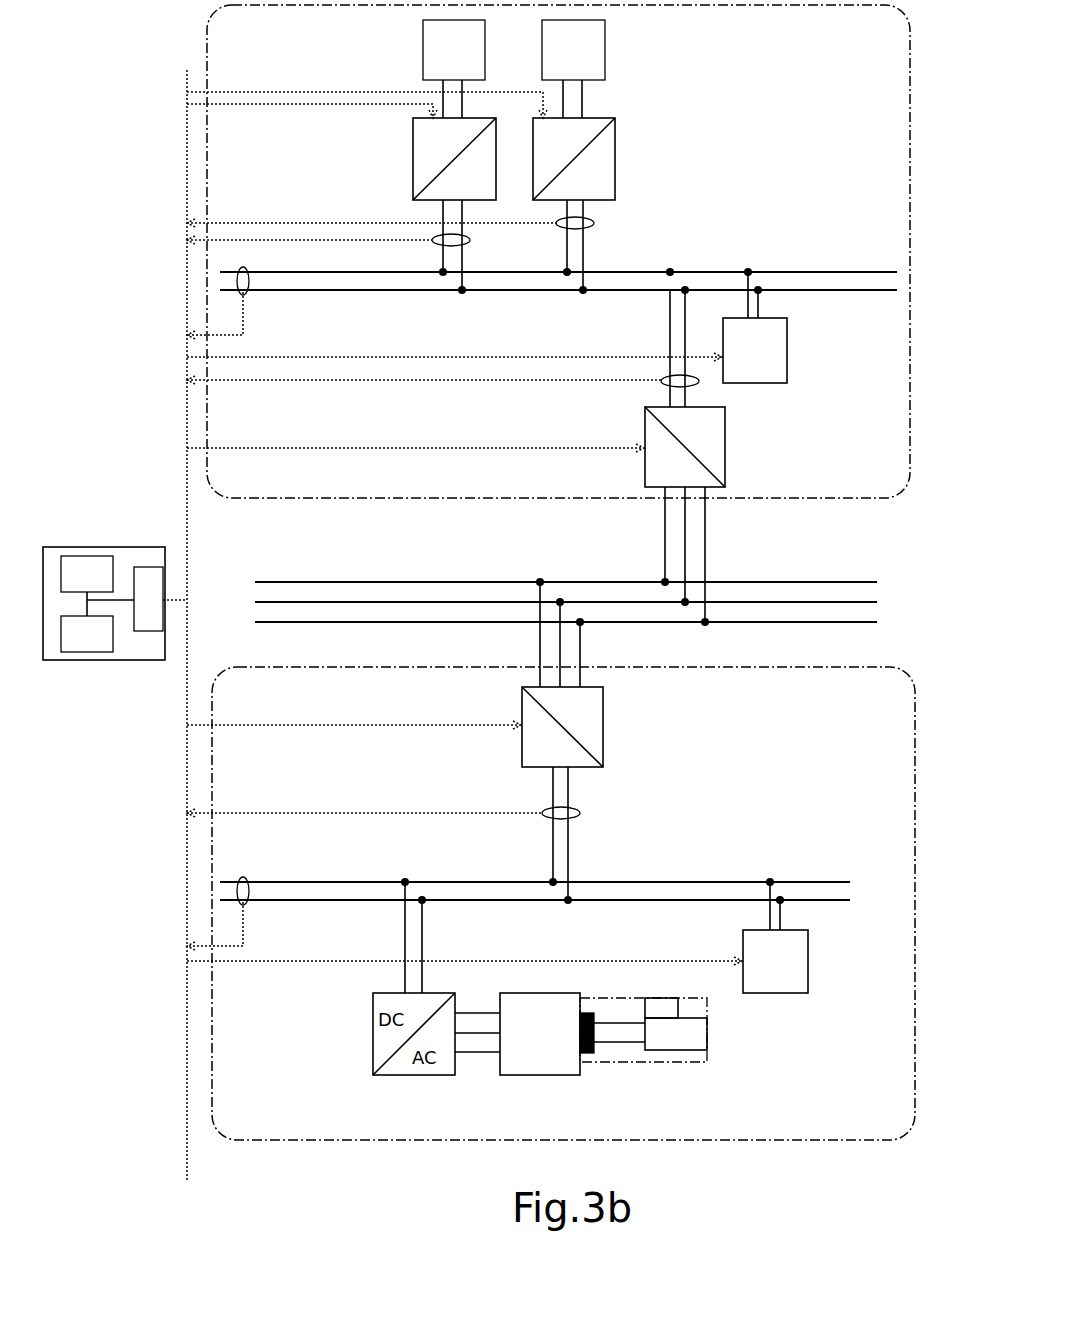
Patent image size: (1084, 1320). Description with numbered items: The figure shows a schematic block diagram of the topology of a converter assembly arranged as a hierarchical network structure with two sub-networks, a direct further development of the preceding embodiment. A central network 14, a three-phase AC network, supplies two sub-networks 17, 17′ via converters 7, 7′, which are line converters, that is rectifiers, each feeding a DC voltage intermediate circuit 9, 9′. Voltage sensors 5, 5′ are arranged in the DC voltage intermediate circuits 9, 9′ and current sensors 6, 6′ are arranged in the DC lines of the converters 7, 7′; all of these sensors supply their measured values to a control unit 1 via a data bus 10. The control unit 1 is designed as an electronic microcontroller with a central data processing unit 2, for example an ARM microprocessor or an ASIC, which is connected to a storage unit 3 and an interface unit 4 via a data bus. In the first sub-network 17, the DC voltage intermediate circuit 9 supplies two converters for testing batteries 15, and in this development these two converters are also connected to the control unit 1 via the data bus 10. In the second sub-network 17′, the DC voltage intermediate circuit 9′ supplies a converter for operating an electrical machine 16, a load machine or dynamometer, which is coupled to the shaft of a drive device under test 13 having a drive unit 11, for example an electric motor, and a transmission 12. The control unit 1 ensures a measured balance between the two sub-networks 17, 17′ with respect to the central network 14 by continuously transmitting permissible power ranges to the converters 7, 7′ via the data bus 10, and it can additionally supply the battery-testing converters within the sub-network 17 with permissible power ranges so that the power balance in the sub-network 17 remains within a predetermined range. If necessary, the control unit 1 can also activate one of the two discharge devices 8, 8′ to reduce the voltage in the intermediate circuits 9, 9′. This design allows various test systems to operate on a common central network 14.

The control unit 1 is at (97, 547).
The central data processing unit 2 is at (87, 574).
The storage unit 3 is at (87, 634).
The interface unit 4 is at (148, 599).
The voltage sensor 5 is at (247, 292).
The voltage sensor 5′ is at (247, 878).
The current sensor 6 is at (664, 388).
The current sensor 6′ is at (543, 808).
The converter 7 is at (726, 455).
The converter 7′ is at (603, 722).
The discharge device 8 is at (755, 327).
The discharge device 8′ is at (775, 937).
The DC voltage intermediate circuit 9 is at (814, 270).
The DC voltage intermediate circuit 9′ is at (339, 872).
The data bus 10 is at (185, 690).
The drive unit 11 is at (668, 1008).
The transmission 12 is at (676, 1034).
The drive device under test 13 is at (650, 1062).
The central network 14 is at (268, 574).
The battery 15 is at (514, 69).
The electrical machine 16 is at (540, 1034).
The sub-network 17 is at (838, 500).
The sub-network 17′ is at (813, 667).